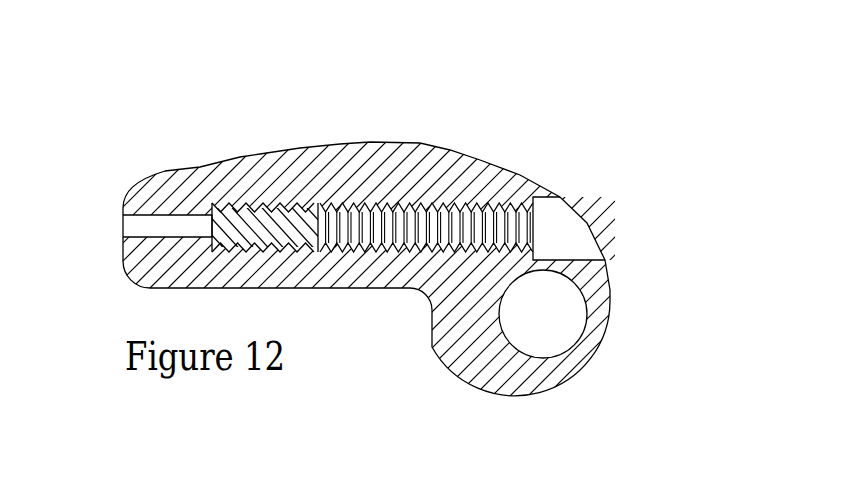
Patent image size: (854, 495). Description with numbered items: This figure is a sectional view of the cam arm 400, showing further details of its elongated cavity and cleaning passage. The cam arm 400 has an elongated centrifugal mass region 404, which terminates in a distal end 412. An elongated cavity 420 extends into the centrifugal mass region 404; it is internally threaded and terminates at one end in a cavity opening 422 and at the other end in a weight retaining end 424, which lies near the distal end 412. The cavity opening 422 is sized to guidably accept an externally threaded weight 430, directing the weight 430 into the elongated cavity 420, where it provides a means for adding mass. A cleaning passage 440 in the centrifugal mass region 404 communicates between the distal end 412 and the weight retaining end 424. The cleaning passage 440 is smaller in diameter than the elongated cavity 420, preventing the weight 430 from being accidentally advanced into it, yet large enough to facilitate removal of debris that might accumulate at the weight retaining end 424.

The cam arm 400 is at (427, 212).
The centrifugal mass region 404 is at (332, 142).
The distal end 412 is at (128, 253).
The cleaning passage 440 is at (128, 228).
The weight retaining end 424 is at (212, 207).
The externally threaded weight 430 is at (265, 205).
The elongated cavity 420 is at (490, 215).
The cavity opening 422 is at (578, 225).